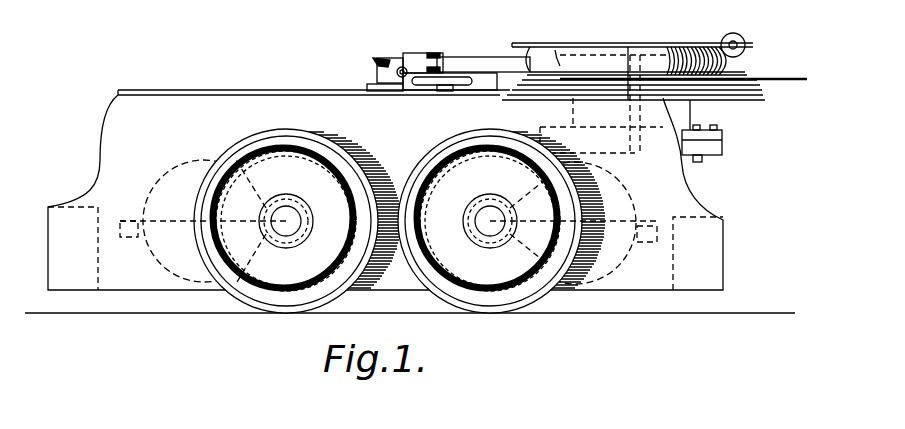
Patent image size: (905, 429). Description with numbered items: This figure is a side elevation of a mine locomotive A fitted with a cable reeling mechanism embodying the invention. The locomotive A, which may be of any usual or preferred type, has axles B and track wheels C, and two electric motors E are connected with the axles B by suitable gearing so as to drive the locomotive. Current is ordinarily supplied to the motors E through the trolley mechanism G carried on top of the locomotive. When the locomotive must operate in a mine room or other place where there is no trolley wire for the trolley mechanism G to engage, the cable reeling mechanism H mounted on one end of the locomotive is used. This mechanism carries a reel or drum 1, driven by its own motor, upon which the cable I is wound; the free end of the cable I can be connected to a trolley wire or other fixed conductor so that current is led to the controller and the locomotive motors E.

The mine locomotive A is at (170, 157).
The axle B is at (293, 214).
The track wheel C is at (346, 293).
The electric motor E is at (185, 170).
The trolley mechanism G is at (470, 62).
The cable reeling mechanism H is at (633, 85).
The cable I is at (775, 75).
The reel or drum 1 is at (558, 62).